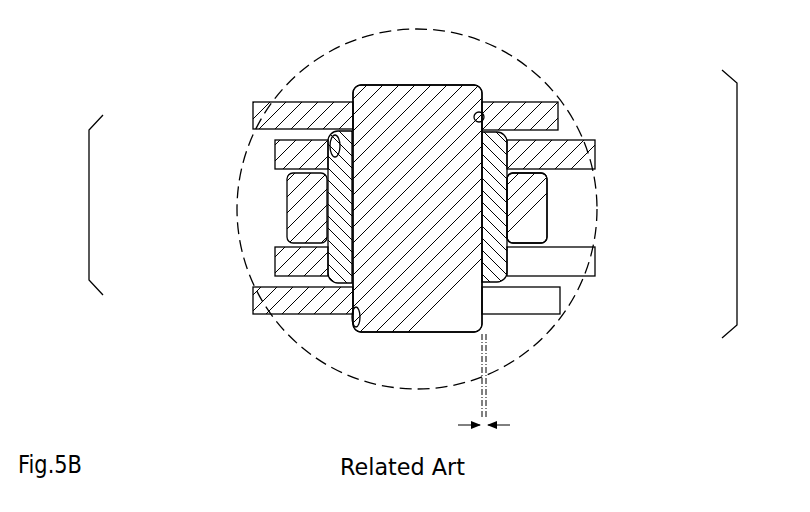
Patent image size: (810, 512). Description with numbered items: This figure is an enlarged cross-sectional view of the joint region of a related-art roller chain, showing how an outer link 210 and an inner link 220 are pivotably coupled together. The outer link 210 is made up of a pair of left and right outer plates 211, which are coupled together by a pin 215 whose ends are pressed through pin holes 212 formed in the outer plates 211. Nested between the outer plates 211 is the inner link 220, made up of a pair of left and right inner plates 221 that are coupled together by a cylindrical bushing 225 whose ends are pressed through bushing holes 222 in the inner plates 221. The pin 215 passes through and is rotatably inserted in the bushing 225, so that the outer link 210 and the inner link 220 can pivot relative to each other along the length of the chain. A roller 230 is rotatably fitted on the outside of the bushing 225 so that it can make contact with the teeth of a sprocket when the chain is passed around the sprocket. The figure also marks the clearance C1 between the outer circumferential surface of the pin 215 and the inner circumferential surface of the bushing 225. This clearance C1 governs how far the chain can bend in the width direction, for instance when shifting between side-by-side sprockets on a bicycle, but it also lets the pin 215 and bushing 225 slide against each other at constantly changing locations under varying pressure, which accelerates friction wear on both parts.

The outer link 210 is at (748, 204).
The outer plate 211 is at (560, 123).
The pin hole 212 is at (488, 112).
The pin 215 is at (457, 195).
The inner link 220 is at (79, 205).
The inner plate 221 is at (276, 162).
The bushing hole 222 is at (333, 131).
The bushing 225 is at (288, 218).
The roller 230 is at (537, 220).
The clearance C1 is at (489, 390).